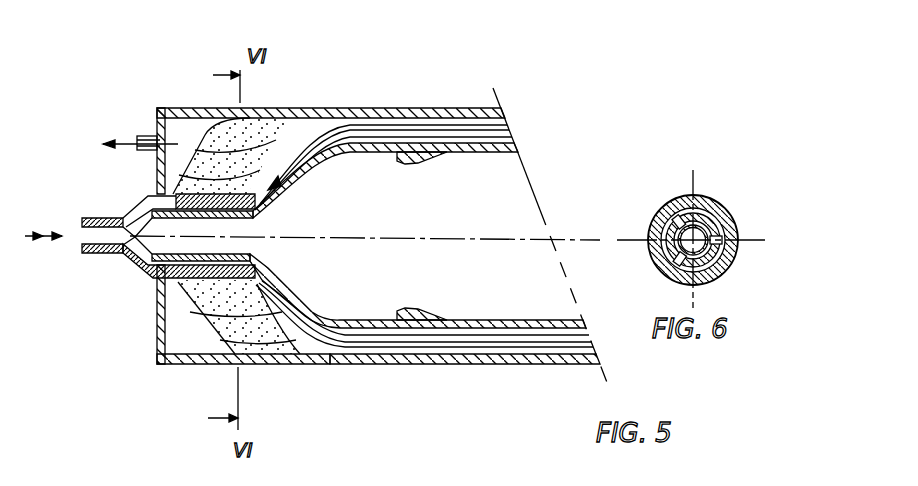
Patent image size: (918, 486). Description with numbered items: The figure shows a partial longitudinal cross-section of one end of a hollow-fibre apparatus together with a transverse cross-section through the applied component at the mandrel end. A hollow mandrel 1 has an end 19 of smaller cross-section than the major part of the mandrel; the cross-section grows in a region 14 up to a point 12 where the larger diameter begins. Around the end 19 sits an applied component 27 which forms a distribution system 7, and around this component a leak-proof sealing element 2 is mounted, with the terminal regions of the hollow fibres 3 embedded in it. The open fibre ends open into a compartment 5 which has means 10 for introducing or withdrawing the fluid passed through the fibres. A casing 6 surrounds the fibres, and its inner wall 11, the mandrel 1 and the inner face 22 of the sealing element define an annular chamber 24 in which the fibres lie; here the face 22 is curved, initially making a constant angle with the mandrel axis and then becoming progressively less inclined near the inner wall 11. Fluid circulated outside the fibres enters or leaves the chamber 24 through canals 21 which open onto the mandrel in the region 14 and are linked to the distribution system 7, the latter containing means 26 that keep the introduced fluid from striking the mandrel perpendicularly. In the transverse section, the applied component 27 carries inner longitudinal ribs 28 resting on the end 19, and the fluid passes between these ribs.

In FIG. 5, the mandrel 1 is at (378, 148).
In FIG. 5, the sealing element 2 is at (275, 135).
In FIG. 5, the hollow fibres 3 is at (341, 148).
In FIG. 5, the compartment 5 is at (187, 135).
In FIG. 5, the casing 6 is at (437, 112).
In FIG. 5, the distribution system 7 is at (90, 230).
In FIG. 6, the distribution system 7 is at (708, 237).
In FIG. 5, the means for introduction or withdrawal of fluid 10 is at (147, 140).
In FIG. 5, the inner wall of the casing 11 is at (423, 355).
In FIG. 5, the point of larger cross-section 12 is at (320, 363).
In FIG. 5, the region of increasing cross-section 14 is at (292, 285).
In FIG. 5, the end of the mandrel 19 is at (158, 286).
In FIG. 6, the end of the mandrel 19 is at (712, 228).
In FIG. 5, the canals 21 is at (256, 278).
In FIG. 5, the inner face of the sealing element 22 is at (266, 295).
In FIG. 5, the chamber 24 is at (495, 338).
In FIG. 5, the means for preventing perpendicular fluid contact 26 is at (133, 262).
In FIG. 5, the applied component 27 is at (83, 253).
In FIG. 6, the applied component 27 is at (718, 212).
In FIG. 6, the inner longitudinal ribs 28 is at (657, 213).